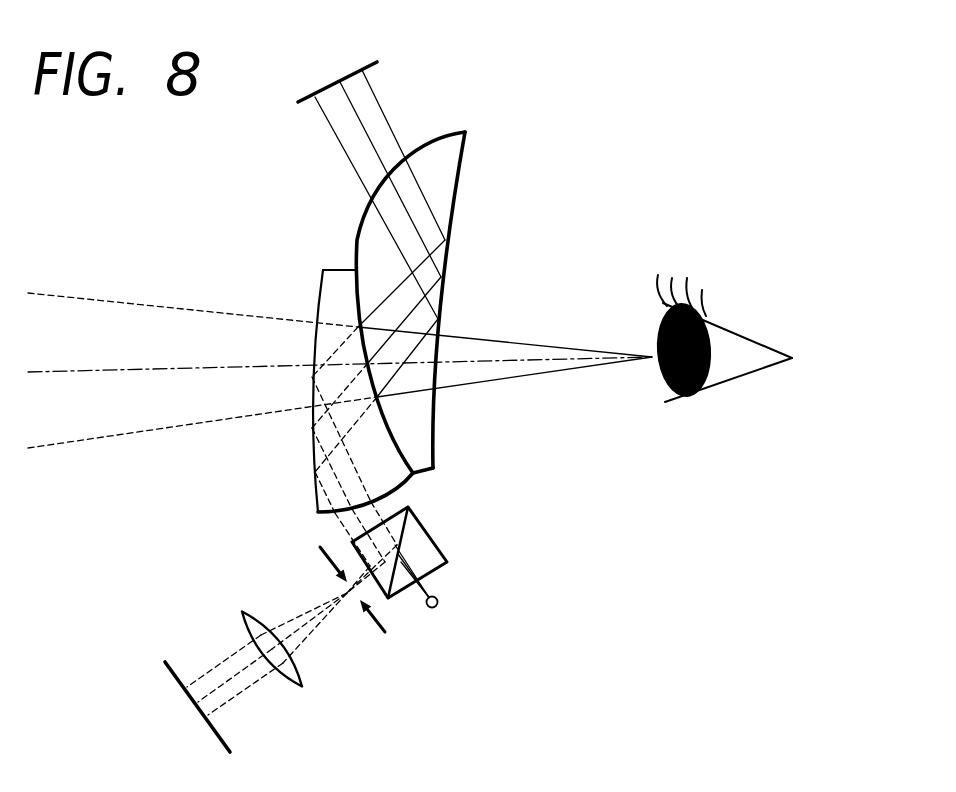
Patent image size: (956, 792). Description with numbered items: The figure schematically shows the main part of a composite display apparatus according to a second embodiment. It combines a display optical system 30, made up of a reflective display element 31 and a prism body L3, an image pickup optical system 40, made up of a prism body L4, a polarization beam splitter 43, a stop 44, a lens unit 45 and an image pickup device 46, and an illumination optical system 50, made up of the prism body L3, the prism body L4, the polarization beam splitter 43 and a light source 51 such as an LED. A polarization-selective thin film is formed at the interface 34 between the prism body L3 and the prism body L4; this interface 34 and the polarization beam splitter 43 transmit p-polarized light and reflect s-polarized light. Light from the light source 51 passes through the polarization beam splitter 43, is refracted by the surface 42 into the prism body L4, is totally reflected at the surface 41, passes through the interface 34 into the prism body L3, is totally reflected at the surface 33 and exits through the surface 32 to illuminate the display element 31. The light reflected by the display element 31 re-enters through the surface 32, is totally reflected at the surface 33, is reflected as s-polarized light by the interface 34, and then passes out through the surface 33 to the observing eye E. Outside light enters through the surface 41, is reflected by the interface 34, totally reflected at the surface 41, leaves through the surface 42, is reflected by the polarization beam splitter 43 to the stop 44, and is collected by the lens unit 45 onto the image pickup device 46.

The display optical system 30 is at (558, 195).
The reflective display element 31 is at (343, 76).
The surface 32 is at (447, 131).
The surface 33 is at (461, 177).
The interface 34 is at (431, 463).
The prism body L3 is at (427, 408).
The prism body L4 is at (332, 290).
The image pickup optical system 40 is at (205, 502).
The surface 41 is at (311, 456).
The surface 42 is at (416, 482).
The polarization beam splitter 43 is at (423, 540).
The stop 44 is at (385, 633).
The lens unit 45 is at (243, 612).
The image pickup device 46 is at (165, 663).
The illumination optical system 50 is at (490, 568).
The light source 51 is at (437, 604).
The observing eye E is at (737, 378).